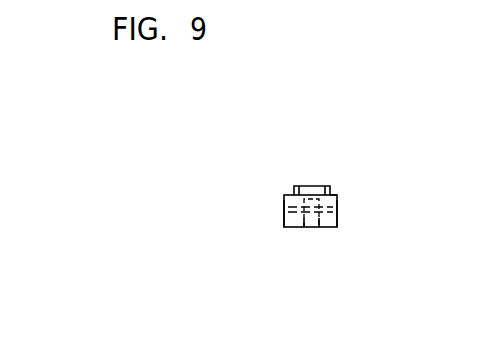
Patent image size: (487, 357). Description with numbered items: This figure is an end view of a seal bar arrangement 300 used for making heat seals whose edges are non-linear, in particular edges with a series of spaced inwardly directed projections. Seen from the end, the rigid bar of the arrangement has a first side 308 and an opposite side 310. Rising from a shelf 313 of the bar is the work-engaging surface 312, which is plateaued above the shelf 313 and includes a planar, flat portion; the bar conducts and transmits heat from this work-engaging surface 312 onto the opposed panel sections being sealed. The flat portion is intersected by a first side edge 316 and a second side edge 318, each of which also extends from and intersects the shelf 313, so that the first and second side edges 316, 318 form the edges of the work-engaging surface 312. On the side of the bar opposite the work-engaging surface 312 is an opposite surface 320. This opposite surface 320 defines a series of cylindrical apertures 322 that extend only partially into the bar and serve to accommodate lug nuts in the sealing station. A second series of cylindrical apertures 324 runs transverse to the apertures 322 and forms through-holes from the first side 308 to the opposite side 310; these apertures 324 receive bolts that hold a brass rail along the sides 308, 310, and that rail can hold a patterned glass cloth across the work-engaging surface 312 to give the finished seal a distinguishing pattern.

The seal bar arrangement 300 is at (368, 128).
The first side 308 is at (283, 222).
The opposite side 310 is at (338, 227).
The work-engaging surface 312 is at (308, 186).
The shelf 313 is at (334, 195).
The first side edge 316 is at (294, 190).
The second side edge 318 is at (331, 186).
The opposite surface 320 is at (327, 228).
The cylindrical apertures 322 is at (310, 227).
The second series of cylindrical apertures 324 is at (338, 213).